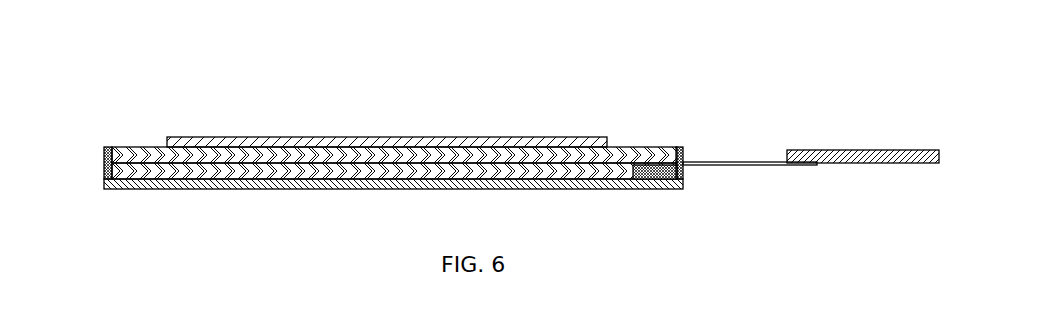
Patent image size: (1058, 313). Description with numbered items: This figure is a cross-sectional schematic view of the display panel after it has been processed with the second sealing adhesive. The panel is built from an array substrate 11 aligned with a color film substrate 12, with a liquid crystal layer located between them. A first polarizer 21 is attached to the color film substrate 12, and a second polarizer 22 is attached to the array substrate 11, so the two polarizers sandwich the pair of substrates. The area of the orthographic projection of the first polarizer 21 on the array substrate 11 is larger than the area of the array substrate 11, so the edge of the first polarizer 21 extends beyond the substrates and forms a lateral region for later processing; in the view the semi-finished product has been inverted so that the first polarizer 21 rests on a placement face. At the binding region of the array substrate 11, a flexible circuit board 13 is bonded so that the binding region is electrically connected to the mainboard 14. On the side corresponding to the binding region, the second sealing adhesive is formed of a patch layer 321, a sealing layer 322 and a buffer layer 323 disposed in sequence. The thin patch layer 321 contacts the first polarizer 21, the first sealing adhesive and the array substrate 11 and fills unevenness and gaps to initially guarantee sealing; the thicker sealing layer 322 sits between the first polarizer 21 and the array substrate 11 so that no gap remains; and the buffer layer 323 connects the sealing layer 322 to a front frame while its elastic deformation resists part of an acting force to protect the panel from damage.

The array substrate 11 is at (195, 148).
The color film substrate 12 is at (233, 174).
The second polarizer 22 is at (312, 144).
The first polarizer 21 is at (375, 188).
The patch layer 321 is at (107, 147).
The sealing layer 322 is at (683, 166).
The buffer layer 323 is at (681, 148).
The flexible circuit board 13 is at (735, 163).
The mainboard 14 is at (826, 157).